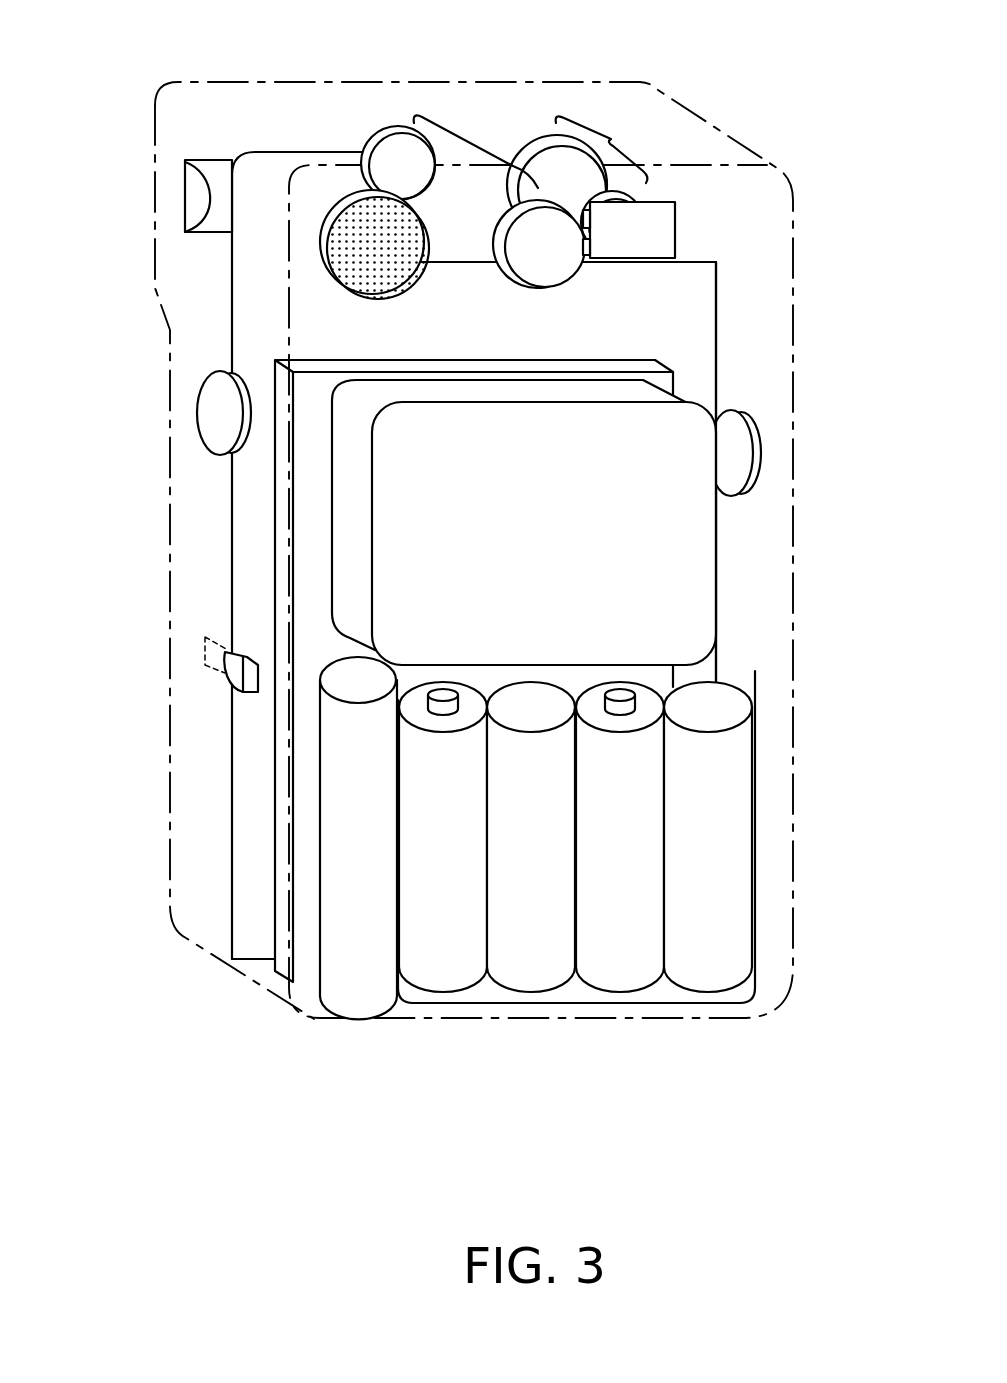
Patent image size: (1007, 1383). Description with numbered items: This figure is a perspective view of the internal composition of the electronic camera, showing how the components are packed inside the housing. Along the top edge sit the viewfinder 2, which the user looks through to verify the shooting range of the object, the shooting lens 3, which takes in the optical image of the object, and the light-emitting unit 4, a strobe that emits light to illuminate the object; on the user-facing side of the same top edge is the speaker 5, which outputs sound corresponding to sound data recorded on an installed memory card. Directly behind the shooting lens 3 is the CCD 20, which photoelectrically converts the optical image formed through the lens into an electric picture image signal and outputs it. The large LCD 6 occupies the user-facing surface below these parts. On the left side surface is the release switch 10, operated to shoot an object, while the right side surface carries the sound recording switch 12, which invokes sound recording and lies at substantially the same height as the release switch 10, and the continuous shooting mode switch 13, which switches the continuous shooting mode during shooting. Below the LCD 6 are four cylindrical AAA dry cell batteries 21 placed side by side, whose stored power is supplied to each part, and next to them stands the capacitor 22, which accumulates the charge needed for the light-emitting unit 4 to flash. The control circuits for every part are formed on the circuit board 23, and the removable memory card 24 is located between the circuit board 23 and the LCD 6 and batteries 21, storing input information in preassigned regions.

The viewfinder 2 is at (487, 155).
The shooting lens 3 is at (611, 139).
The light-emitting unit 4 is at (215, 168).
The speaker 5 is at (362, 193).
The LCD 6 is at (682, 610).
The release switch 10 is at (750, 440).
The sound recording switch 12 is at (210, 423).
The continuous shooting mode switch 13 is at (235, 672).
The CCD 20 is at (655, 207).
The batteries 21 is at (575, 1001).
The capacitor 22 is at (356, 996).
The circuit board 23 is at (243, 275).
The memory card 24 is at (273, 542).